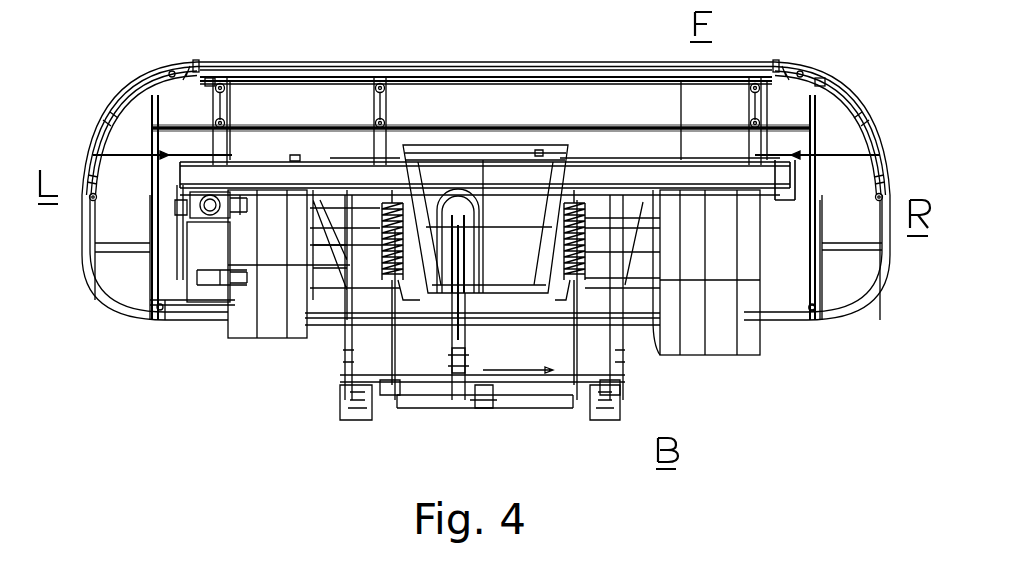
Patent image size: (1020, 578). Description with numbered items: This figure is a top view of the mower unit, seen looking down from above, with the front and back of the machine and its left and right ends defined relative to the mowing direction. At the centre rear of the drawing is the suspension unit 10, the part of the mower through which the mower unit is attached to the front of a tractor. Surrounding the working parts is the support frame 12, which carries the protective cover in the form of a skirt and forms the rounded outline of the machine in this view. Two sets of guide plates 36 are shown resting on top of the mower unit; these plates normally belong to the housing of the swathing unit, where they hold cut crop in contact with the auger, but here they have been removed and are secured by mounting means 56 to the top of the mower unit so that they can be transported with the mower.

The suspension unit 10 is at (420, 398).
The support frame 12 is at (115, 298).
The guide plates 36 is at (268, 328).
The mounting means 56 is at (218, 278).